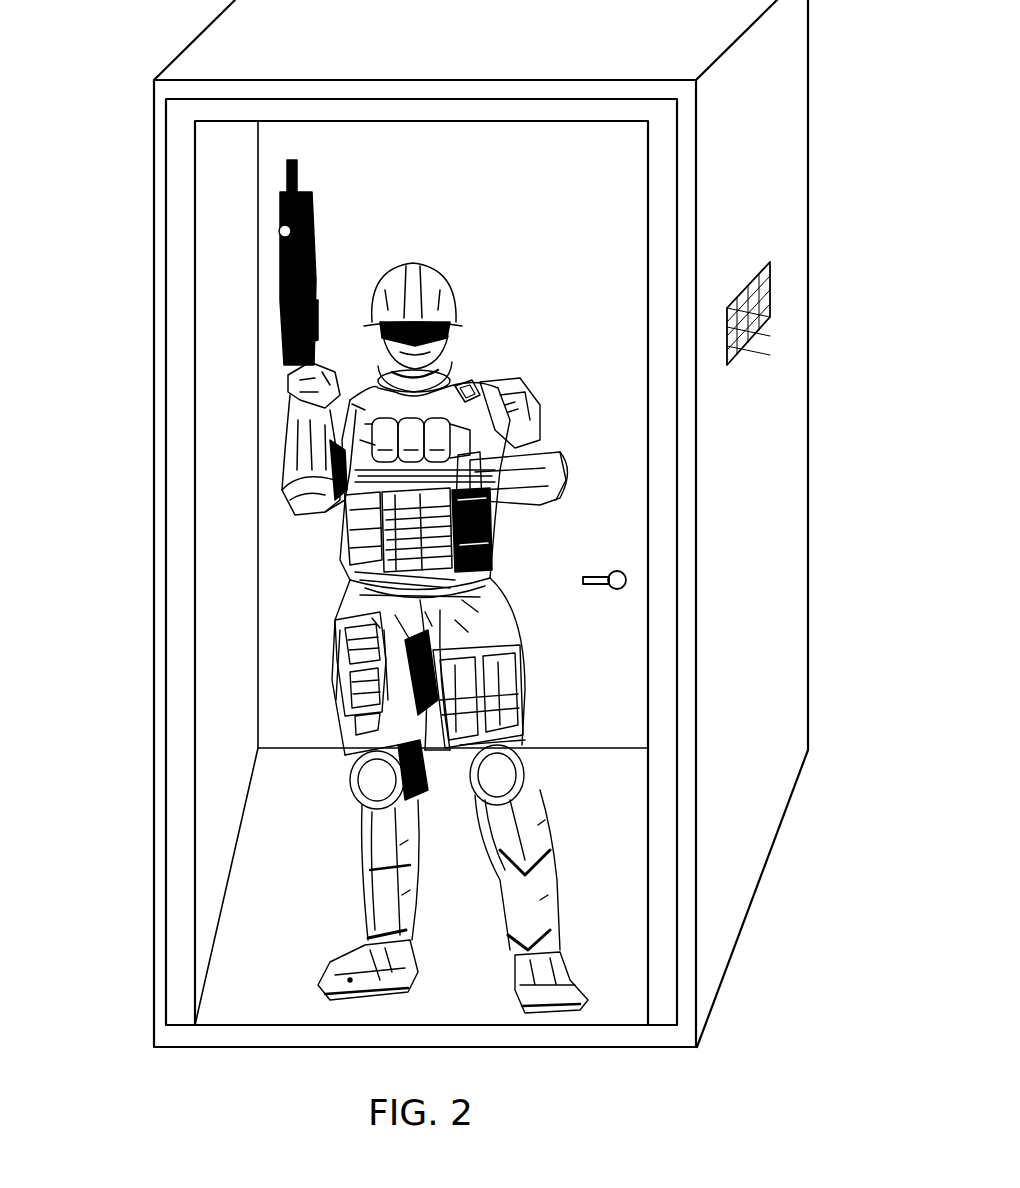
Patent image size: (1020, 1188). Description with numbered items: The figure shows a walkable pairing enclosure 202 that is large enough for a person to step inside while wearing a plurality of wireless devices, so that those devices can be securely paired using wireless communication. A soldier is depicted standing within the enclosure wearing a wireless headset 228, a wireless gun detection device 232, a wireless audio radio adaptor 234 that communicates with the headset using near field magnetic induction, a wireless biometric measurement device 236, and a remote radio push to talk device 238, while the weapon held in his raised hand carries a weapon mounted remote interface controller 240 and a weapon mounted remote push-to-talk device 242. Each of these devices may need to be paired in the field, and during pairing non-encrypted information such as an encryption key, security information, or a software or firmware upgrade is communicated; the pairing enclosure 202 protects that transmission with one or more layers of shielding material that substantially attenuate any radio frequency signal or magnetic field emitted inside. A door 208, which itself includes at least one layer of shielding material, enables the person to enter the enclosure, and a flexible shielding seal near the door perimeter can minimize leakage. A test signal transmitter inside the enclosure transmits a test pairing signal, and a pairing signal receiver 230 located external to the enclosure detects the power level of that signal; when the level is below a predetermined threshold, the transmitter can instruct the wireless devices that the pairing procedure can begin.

The pairing enclosure 202 is at (154, 127).
The door 208 is at (648, 135).
The wireless headset 228 is at (452, 318).
The pairing signal receiver 230 is at (765, 308).
The wireless gun detection device 232 is at (466, 388).
The wireless audio radio adaptor 234 is at (470, 540).
The wireless biometric measurement device 236 is at (405, 432).
The remote radio push to talk device 238 is at (345, 520).
The weapon mounted remote interface controller 240 is at (297, 383).
The weapon mounted remote push-to-talk device 242 is at (280, 233).